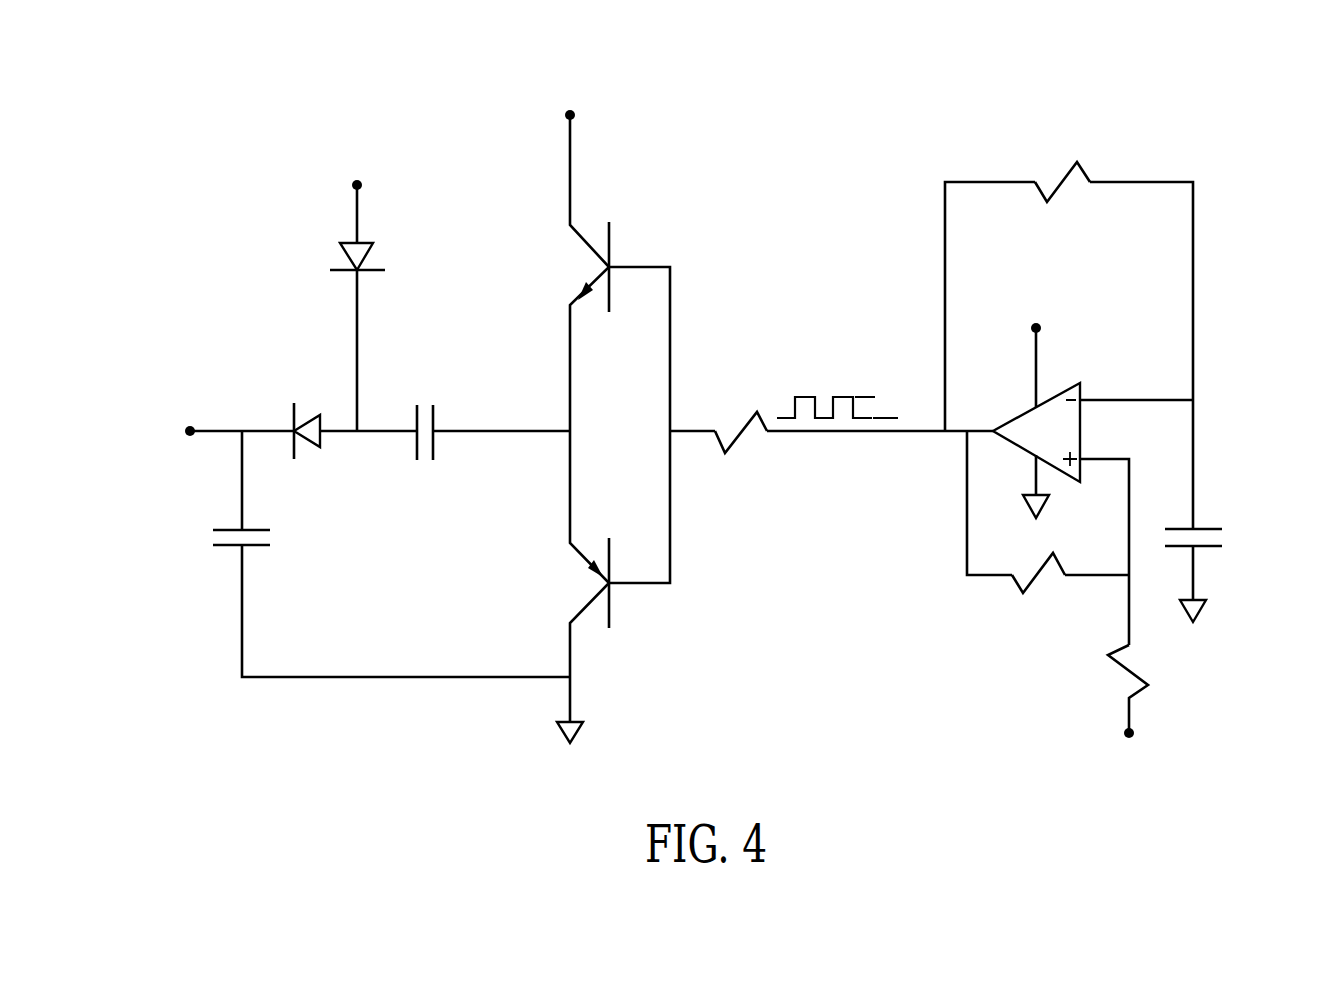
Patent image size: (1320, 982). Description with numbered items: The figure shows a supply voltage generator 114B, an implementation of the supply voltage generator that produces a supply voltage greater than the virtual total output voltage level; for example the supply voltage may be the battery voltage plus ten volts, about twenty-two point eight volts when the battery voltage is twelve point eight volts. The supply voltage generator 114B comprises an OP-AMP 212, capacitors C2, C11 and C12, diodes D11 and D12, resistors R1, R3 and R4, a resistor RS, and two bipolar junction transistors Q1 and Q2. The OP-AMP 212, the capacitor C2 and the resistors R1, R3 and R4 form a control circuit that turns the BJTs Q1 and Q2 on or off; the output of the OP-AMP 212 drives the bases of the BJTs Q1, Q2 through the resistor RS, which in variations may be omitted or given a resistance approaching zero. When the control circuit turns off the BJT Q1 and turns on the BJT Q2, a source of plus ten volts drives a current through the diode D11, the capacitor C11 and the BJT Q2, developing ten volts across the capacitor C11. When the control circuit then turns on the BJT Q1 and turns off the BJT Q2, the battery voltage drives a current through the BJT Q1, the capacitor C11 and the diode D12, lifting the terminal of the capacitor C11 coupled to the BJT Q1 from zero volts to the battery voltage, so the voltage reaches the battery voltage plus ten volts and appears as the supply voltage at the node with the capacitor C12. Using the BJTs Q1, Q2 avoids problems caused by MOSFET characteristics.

The supply voltage generator 114B is at (242, 103).
The OP-AMP 212 is at (1056, 396).
The diode D11 is at (378, 283).
The diode D12 is at (309, 415).
The capacitor C11 is at (454, 425).
The capacitor C12 is at (268, 537).
The bipolar junction transistor Q1 is at (575, 273).
The bipolar junction transistor Q2 is at (575, 576).
The resistor RS is at (741, 416).
The resistor R1 is at (1062, 165).
The resistor R3 is at (1038, 588).
The resistor R4 is at (1144, 711).
The capacitor C2 is at (1197, 559).